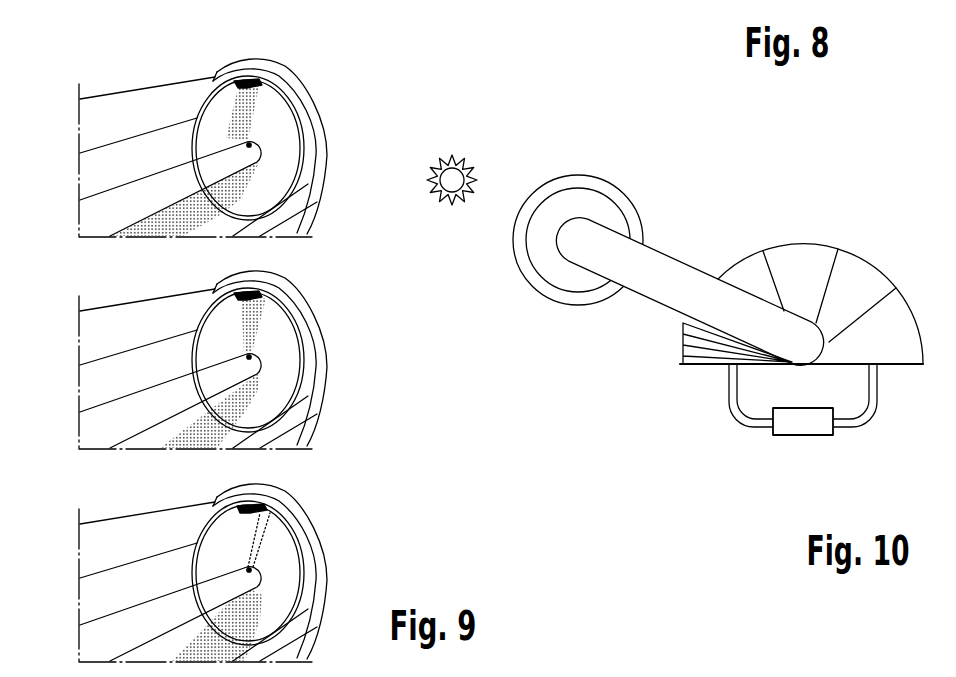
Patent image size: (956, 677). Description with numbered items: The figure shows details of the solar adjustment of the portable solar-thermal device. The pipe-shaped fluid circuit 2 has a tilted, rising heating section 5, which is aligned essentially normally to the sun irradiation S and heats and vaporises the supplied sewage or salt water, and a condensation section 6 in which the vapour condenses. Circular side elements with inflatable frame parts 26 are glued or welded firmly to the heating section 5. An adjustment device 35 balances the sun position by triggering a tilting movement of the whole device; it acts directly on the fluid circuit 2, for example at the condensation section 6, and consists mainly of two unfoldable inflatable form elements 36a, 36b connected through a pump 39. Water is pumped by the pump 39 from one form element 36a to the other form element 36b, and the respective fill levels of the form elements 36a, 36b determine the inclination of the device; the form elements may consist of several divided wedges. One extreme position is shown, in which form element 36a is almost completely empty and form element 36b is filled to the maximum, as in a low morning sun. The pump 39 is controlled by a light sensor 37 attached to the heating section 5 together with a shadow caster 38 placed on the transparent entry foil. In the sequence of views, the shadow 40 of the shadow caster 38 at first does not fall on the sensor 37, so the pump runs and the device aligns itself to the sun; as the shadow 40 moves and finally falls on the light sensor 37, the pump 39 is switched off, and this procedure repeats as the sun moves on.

In FIG. 9, the heating section 5 is at (155, 193).
In FIG. 9, the inflatable frame parts 26 is at (313, 143).
In FIG. 9, the light sensor 37 is at (258, 137).
In FIG. 9, the shadow caster 38 is at (243, 78).
In FIG. 9, the shadow 40 is at (240, 110).
In FIG. 10, the fluid circuit 2 is at (636, 303).
In FIG. 10, the condensation section 6 is at (663, 268).
In FIG. 10, the adjustment device 35 is at (850, 220).
In FIG. 10, the first inflatable form element 36a is at (683, 360).
In FIG. 10, the second inflatable form element 36b is at (847, 275).
In FIG. 10, the pump 39 is at (807, 420).
In FIG. 10, the sun irradiation S is at (500, 202).